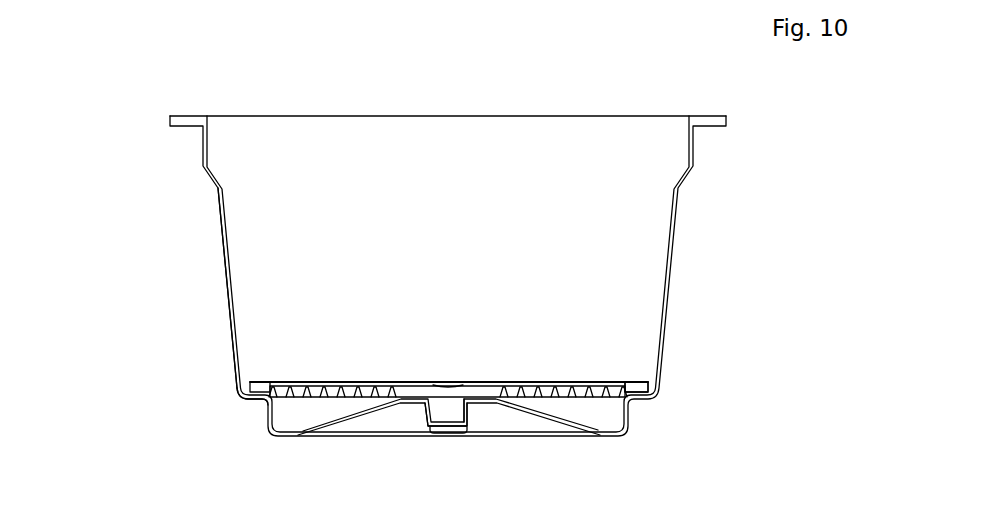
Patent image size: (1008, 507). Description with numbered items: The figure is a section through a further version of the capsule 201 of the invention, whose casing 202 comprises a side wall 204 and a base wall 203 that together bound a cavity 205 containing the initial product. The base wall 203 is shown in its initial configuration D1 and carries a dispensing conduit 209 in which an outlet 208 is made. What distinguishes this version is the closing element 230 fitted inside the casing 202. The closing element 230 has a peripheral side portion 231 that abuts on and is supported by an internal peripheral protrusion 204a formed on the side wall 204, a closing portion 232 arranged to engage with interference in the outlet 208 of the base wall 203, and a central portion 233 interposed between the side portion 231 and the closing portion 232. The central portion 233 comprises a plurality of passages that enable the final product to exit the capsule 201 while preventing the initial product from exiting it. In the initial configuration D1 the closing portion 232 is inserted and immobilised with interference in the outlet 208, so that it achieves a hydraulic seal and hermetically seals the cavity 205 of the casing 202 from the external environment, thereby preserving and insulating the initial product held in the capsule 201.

The capsule 201 is at (185, 66).
The casing 202 is at (672, 333).
The base wall 203 is at (333, 423).
The side wall 204 is at (232, 353).
The internal peripheral protrusion 204a is at (250, 398).
The cavity 205 is at (605, 192).
The outlet 208 is at (449, 433).
The dispensing conduit 209 is at (473, 420).
The closing element 230 is at (336, 372).
The peripheral side portion 231 is at (637, 390).
The closing portion 232 is at (452, 413).
The central portion 233 is at (372, 385).
The initial configuration D1 is at (225, 440).